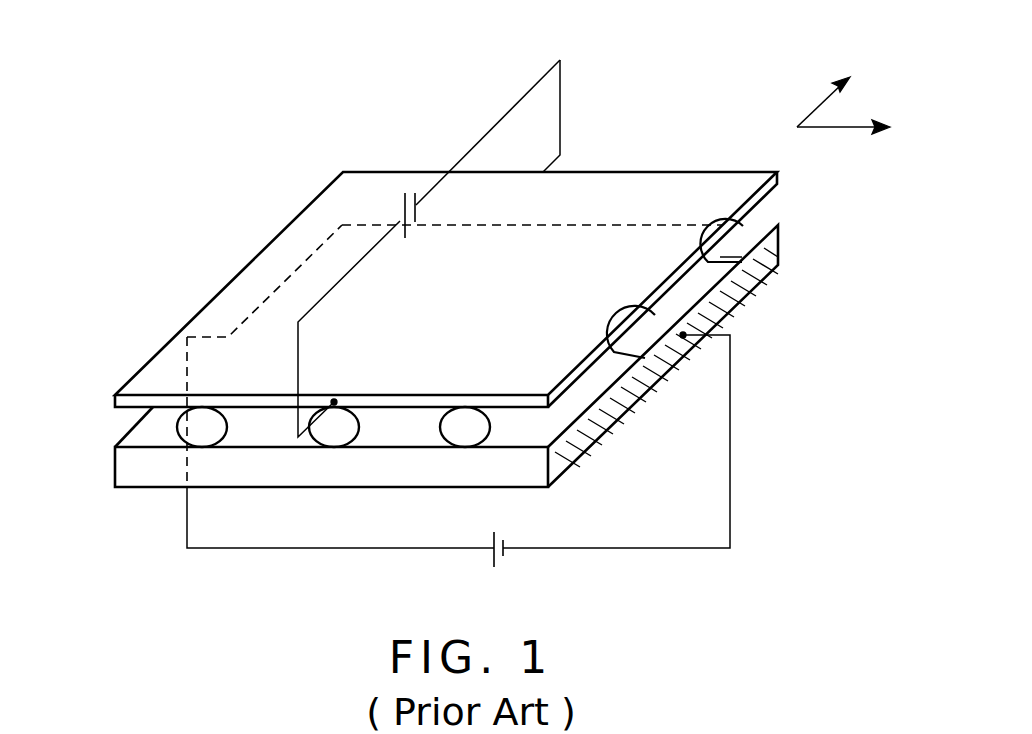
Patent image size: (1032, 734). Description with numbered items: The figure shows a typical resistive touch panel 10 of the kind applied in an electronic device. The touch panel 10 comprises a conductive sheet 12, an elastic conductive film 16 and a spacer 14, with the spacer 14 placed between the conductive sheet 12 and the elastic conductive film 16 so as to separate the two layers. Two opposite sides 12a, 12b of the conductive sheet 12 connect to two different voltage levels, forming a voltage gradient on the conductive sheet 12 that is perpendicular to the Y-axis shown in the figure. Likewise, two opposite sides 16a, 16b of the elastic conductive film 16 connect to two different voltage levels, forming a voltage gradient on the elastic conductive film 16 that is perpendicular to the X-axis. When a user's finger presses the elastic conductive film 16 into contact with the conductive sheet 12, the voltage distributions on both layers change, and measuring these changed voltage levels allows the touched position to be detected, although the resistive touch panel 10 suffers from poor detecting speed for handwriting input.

The resistive touch panel 10 is at (222, 176).
The conductive sheet 12 is at (452, 344).
The side of the conductive sheet 12a is at (623, 400).
The side of the conductive sheet 12b is at (117, 438).
The spacer 14 is at (767, 270).
The elastic conductive film 16 is at (483, 309).
The side of the elastic conductive film 16a is at (403, 400).
The side of the elastic conductive film 16b is at (622, 171).